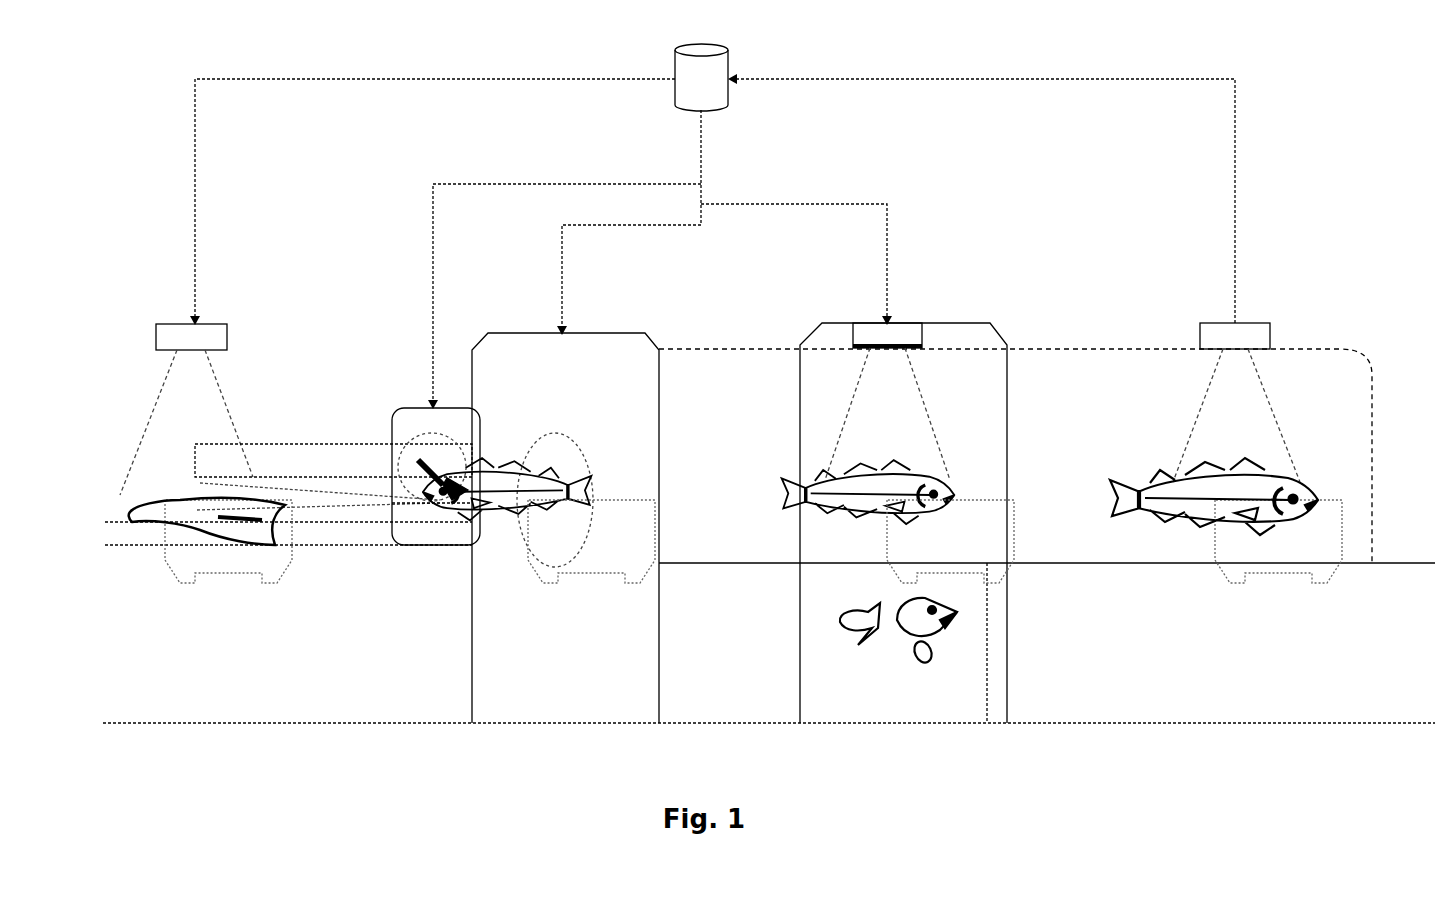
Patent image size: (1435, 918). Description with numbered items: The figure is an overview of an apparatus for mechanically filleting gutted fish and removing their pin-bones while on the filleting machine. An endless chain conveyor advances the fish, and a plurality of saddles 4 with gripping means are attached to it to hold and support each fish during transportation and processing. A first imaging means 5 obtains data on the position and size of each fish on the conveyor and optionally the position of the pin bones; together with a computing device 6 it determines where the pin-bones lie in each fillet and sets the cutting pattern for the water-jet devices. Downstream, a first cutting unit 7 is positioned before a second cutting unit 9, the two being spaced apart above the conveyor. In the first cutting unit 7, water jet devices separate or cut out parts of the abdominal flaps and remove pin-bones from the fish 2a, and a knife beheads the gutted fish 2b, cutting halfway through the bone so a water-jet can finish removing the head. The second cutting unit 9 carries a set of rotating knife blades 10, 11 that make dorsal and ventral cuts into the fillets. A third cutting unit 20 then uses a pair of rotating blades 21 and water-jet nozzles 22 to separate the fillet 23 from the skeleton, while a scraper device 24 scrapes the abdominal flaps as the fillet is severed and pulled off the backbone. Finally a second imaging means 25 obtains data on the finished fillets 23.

The fish in the first cutting unit 2a is at (1283, 495).
The gutted fish 2b is at (927, 478).
The saddle 4 is at (1004, 498).
The first imaging means 5 is at (1236, 402).
The computing device 6 is at (701, 77).
The first cutting unit 7 is at (822, 322).
The second cutting unit 9 is at (518, 330).
The rotating knife blade 10 is at (540, 436).
The rotating knife blade 11 is at (537, 562).
The third cutting unit 20 is at (400, 410).
The rotating blades 21 is at (402, 455).
The water-jet nozzles 22 is at (420, 492).
The fillet 23 is at (141, 528).
The scraper device 24 is at (346, 508).
The camera / scanner 25 is at (186, 409).